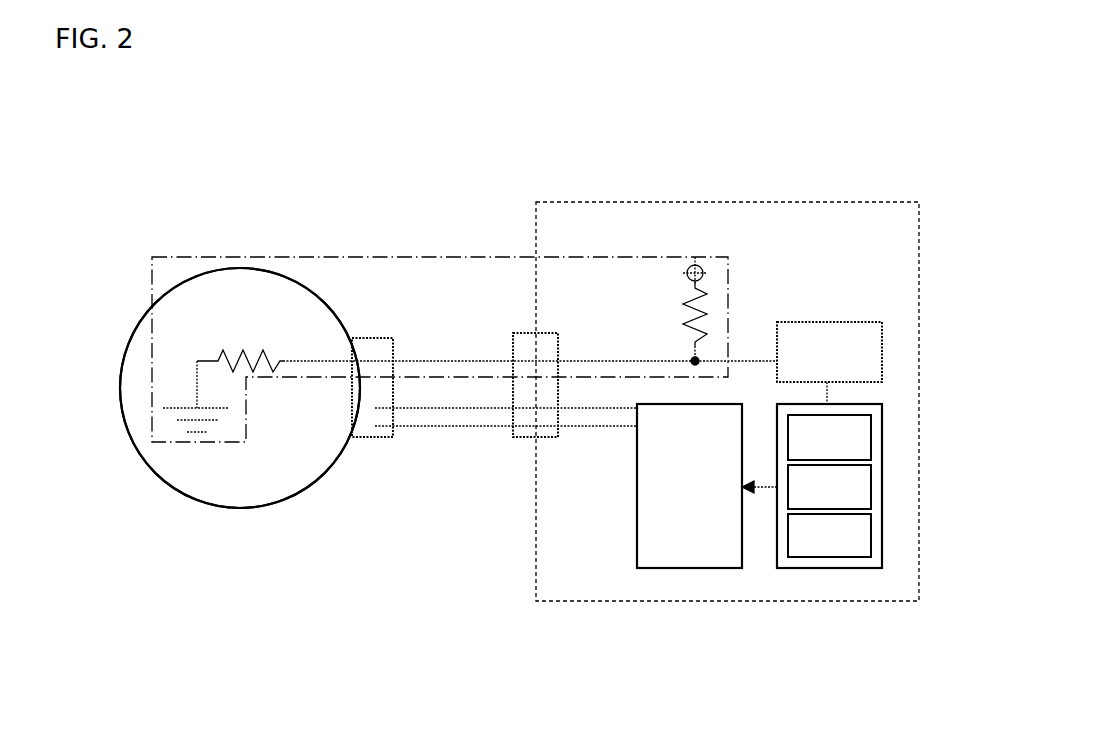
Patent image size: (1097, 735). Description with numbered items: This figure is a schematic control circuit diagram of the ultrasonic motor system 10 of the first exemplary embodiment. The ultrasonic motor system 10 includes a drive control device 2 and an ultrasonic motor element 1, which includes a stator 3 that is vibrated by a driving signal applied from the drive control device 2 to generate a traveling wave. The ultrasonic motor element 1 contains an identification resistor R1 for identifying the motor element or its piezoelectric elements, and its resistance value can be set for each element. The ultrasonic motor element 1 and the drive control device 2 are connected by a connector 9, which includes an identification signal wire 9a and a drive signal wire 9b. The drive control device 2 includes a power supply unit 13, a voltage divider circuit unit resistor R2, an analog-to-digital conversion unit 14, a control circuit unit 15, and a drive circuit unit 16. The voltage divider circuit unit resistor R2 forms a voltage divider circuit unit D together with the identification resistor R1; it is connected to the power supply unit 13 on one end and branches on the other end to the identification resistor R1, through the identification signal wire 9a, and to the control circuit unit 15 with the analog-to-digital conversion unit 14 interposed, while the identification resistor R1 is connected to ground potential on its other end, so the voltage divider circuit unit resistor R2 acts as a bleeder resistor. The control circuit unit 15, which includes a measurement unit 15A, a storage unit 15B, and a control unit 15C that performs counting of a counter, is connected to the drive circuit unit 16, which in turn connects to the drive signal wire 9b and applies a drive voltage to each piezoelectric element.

The ultrasonic motor system 10 is at (164, 153).
The ultrasonic motor element 1 is at (186, 284).
The stator 3 is at (307, 300).
The identification resistor R1 is at (262, 355).
The connector 9 is at (371, 342).
The identification signal wire 9a is at (417, 360).
The drive signal wire 9b is at (413, 408).
The drive control device 2 is at (851, 217).
The voltage divider circuit unit D is at (718, 257).
The voltage divider circuit unit resistor R2 is at (686, 300).
The power supply unit 13 is at (692, 265).
The analog-to-digital conversion unit 14 is at (872, 326).
The control circuit unit 15 is at (840, 541).
The measurement unit 15A is at (865, 452).
The storage unit 15B is at (792, 503).
The control unit 15C is at (820, 552).
The drive circuit unit 16 is at (693, 560).